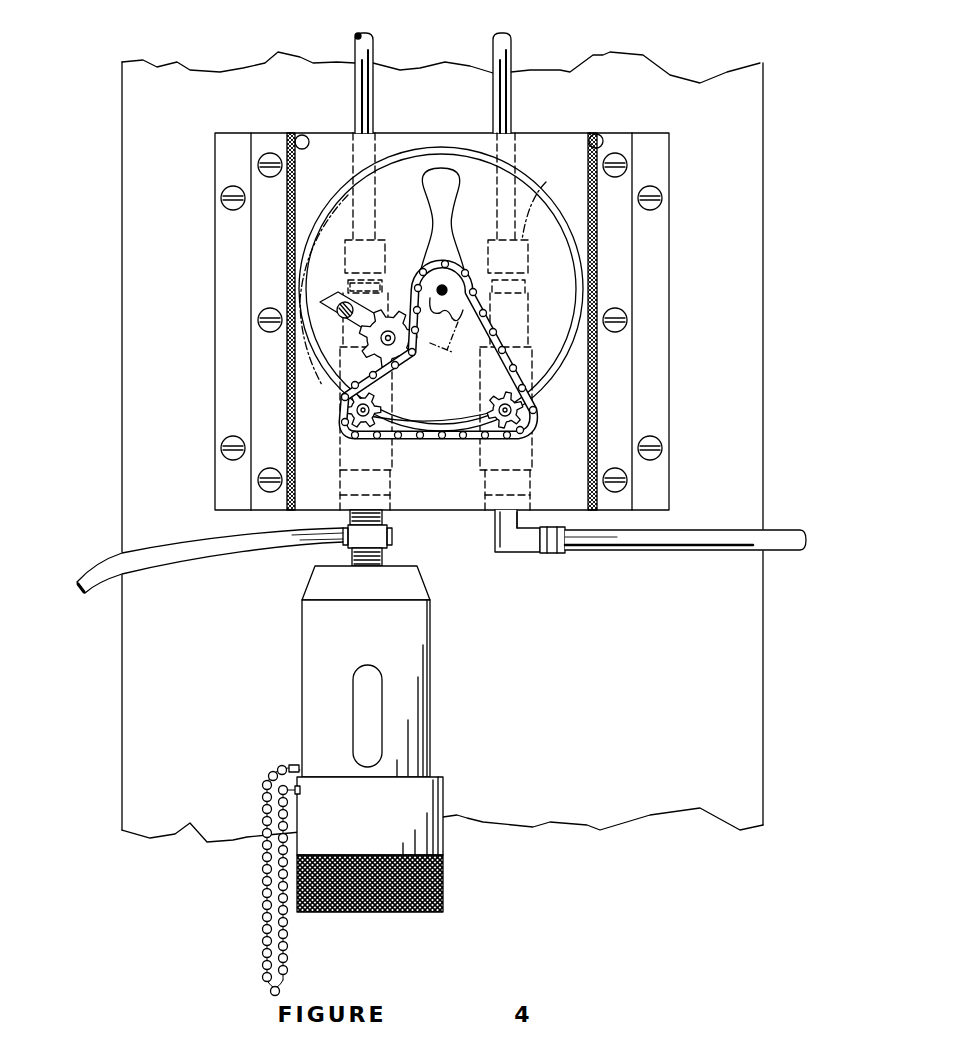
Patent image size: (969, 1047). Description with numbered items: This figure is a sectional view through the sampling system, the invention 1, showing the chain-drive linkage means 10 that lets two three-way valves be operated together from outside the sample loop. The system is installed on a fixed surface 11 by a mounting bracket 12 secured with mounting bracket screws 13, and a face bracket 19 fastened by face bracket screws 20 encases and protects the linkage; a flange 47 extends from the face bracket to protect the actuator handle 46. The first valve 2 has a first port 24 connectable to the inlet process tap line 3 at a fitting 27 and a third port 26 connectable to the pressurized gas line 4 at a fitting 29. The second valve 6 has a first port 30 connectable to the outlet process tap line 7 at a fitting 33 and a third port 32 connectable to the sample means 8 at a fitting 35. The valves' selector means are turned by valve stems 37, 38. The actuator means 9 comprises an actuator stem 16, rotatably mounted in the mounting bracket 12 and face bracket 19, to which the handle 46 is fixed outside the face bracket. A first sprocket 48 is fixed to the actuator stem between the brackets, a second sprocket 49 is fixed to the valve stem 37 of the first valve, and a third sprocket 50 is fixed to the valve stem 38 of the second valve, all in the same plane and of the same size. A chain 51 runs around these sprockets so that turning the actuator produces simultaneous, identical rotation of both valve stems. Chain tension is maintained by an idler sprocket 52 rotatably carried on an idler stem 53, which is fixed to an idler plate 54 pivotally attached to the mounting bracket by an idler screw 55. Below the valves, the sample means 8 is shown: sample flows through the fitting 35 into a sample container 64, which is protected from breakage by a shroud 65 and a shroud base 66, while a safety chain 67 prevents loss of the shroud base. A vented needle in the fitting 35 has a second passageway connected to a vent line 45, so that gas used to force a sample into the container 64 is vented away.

The invention 1 is at (700, 118).
The first valve 2 is at (554, 452).
The inlet process tap line 3 is at (510, 36).
The pressurized gas line 4 is at (688, 550).
The second valve 6 is at (322, 451).
The outlet process tap line 7 is at (360, 36).
The sample means 8 is at (387, 781).
The actuator means 9 is at (430, 294).
The linkage means 10 is at (462, 412).
The fixed surface 11 is at (160, 272).
The mounting bracket 12 is at (652, 260).
The mounting bracket screws 13 is at (222, 198).
The actuator stem 16 is at (452, 316).
The face bracket 19 is at (302, 135).
The face bracket screws 20 is at (258, 163).
The first port 24 is at (522, 328).
The third port 26 is at (520, 488).
The fitting 27 is at (546, 198).
The fitting 29 is at (505, 555).
The first port 30 is at (343, 397).
The third port 32 is at (350, 488).
The fitting 33 is at (348, 196).
The fitting 35 is at (392, 540).
The valve stem 37 is at (522, 412).
The valve stem 38 is at (348, 410).
The vent line 45 is at (215, 545).
The actuator handle 46 is at (428, 224).
The flange 47 is at (458, 148).
The first sprocket 48 is at (451, 344).
The second sprocket 49 is at (520, 437).
The third sprocket 50 is at (343, 434).
The chain 51 is at (452, 447).
The idler sprocket 52 is at (402, 305).
The idler stem 53 is at (398, 356).
The idler plate 54 is at (360, 350).
The idler screw 55 is at (337, 310).
The sample container 64 is at (378, 690).
The shroud 65 is at (432, 645).
The shroud base 66 is at (432, 800).
The safety chain 67 is at (264, 940).